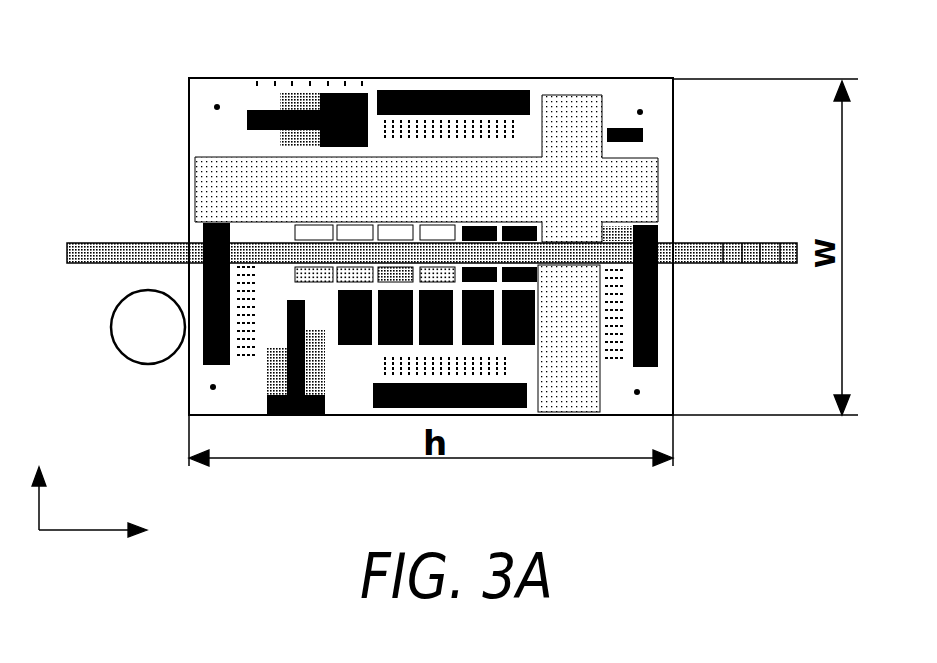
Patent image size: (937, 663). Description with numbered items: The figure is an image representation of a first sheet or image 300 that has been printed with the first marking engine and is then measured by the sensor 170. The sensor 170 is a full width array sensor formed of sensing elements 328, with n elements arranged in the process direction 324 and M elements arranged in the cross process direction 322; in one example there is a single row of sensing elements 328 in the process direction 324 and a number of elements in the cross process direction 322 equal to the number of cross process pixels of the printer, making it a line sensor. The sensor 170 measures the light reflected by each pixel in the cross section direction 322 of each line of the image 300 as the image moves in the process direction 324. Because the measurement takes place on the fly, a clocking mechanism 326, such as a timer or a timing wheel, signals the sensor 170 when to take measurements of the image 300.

The first sheet or image 300 is at (235, 78).
The sensor 170 is at (102, 243).
The sensing elements 328 is at (752, 245).
The clocking mechanism 326 is at (111, 342).
The process direction 324 is at (39, 482).
The cross section direction 322 is at (112, 530).